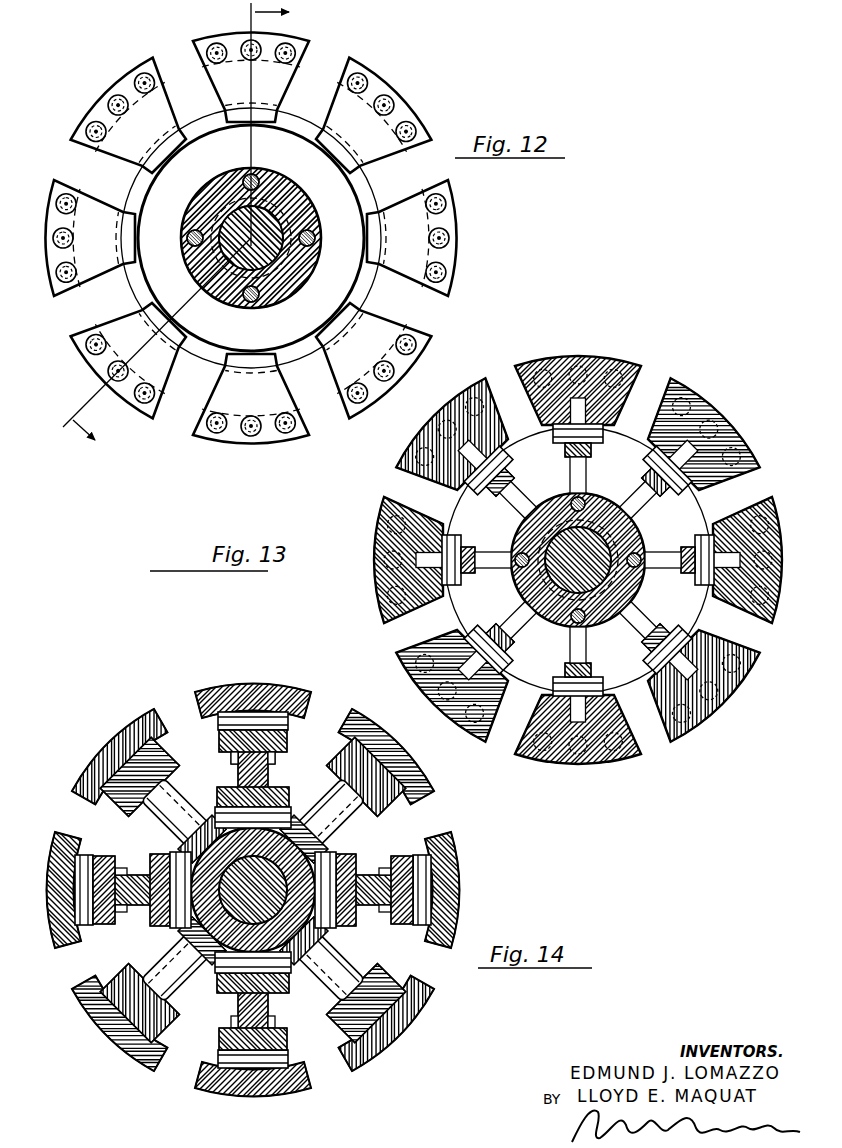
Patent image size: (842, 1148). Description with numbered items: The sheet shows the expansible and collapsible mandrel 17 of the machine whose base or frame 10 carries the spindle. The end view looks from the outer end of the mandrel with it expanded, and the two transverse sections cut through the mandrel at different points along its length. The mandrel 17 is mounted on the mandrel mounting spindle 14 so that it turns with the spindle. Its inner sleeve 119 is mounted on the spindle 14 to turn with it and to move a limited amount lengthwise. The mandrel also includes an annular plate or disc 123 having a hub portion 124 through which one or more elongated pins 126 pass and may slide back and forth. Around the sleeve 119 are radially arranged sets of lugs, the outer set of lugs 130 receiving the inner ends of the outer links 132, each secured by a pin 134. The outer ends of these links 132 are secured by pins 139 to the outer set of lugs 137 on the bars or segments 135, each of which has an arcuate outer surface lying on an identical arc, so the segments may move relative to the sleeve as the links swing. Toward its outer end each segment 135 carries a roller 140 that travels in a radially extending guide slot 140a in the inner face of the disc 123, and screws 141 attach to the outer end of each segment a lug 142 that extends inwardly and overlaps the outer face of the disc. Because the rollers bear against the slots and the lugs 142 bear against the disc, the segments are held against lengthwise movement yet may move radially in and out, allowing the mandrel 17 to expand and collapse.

In FIG. 12, the base or frame 10 is at (193, 235).
In FIG. 12, the mandrel mounting spindle 14 is at (22, 18).
In FIG. 13, the mandrel mounting spindle 14 is at (529, 560).
In FIG. 14, the mandrel mounting spindle 14 is at (307, 838).
In FIG. 12, the expansible and collapsible mandrel 17 is at (427, 78).
In FIG. 13, the expansible and collapsible mandrel 17 is at (605, 327).
In FIG. 14, the expansible and collapsible mandrel 17 is at (223, 662).
In FIG. 13, the inner sleeve 119 is at (529, 560).
In FIG. 14, the inner sleeve 119 is at (307, 838).
In FIG. 12, the annular plate or disc 123 is at (264, 238).
In FIG. 13, the annular plate or disc 123 is at (596, 560).
In FIG. 12, the hub portion 124 is at (55, 30).
In FIG. 12, the elongated pins 126 is at (262, 255).
In FIG. 13, the elongated pins 126 is at (573, 560).
In FIG. 14, the outer set of lugs 130 is at (307, 838).
In FIG. 14, the outer links 132 is at (256, 882).
In FIG. 14, the pin 134 is at (382, 763).
In FIG. 12, the bars or segments 135 is at (249, 247).
In FIG. 13, the bars or segments 135 is at (574, 552).
In FIG. 14, the bars or segments 135 is at (382, 763).
In FIG. 14, the outer set of lugs 137 is at (238, 895).
In FIG. 14, the pins 139 is at (255, 876).
In FIG. 13, the roller 140 is at (454, 560).
In FIG. 13, the guide slots 140a is at (454, 560).
In FIG. 12, the screws 141 is at (278, 238).
In FIG. 13, the screws 141 is at (579, 555).
In FIG. 14, the screws 141 is at (412, 714).
In FIG. 12, the lugs 142 is at (251, 238).